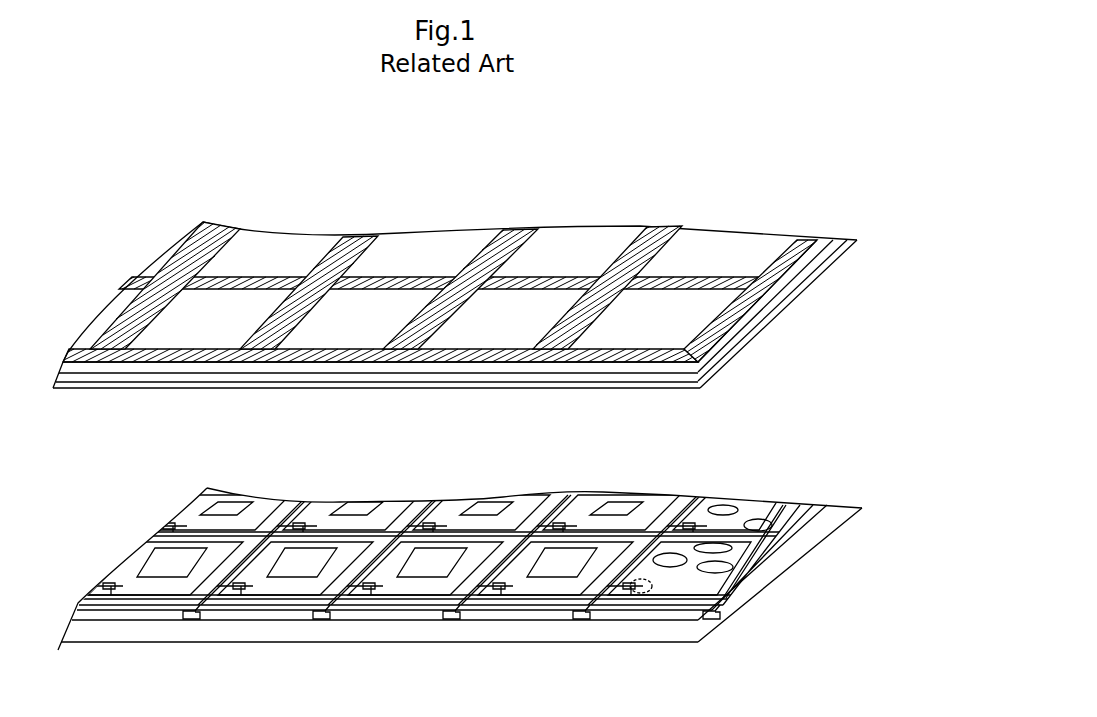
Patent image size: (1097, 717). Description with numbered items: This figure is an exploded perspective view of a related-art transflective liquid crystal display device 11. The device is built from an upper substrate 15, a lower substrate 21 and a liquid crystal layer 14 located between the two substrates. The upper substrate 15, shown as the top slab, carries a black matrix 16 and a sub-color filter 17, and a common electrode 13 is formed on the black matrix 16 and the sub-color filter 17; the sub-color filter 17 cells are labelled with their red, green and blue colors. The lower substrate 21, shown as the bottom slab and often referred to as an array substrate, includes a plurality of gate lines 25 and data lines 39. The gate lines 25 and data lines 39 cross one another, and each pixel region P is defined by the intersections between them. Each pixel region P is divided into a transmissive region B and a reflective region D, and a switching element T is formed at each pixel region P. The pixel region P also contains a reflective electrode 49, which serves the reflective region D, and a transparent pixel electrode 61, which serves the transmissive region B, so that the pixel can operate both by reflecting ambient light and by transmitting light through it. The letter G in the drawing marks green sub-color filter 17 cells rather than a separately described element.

The transflective LCD device 11 is at (850, 603).
The common electrode 13 is at (792, 293).
The liquid crystal layer 14 is at (757, 517).
The upper substrate 15 is at (750, 320).
The black matrix 16 is at (803, 240).
The sub-color filter 17 is at (698, 238).
The lower substrate 21 is at (747, 585).
The gate lines 25 is at (733, 607).
The data lines 39 is at (447, 613).
The reflective electrode 49 is at (537, 597).
The transparent pixel electrode 61 is at (555, 568).
The pixel region P is at (793, 512).
The reflective region D is at (773, 550).
The gate line G is at (430, 565).
The transmissive region B is at (777, 567).
The switching element T is at (632, 592).